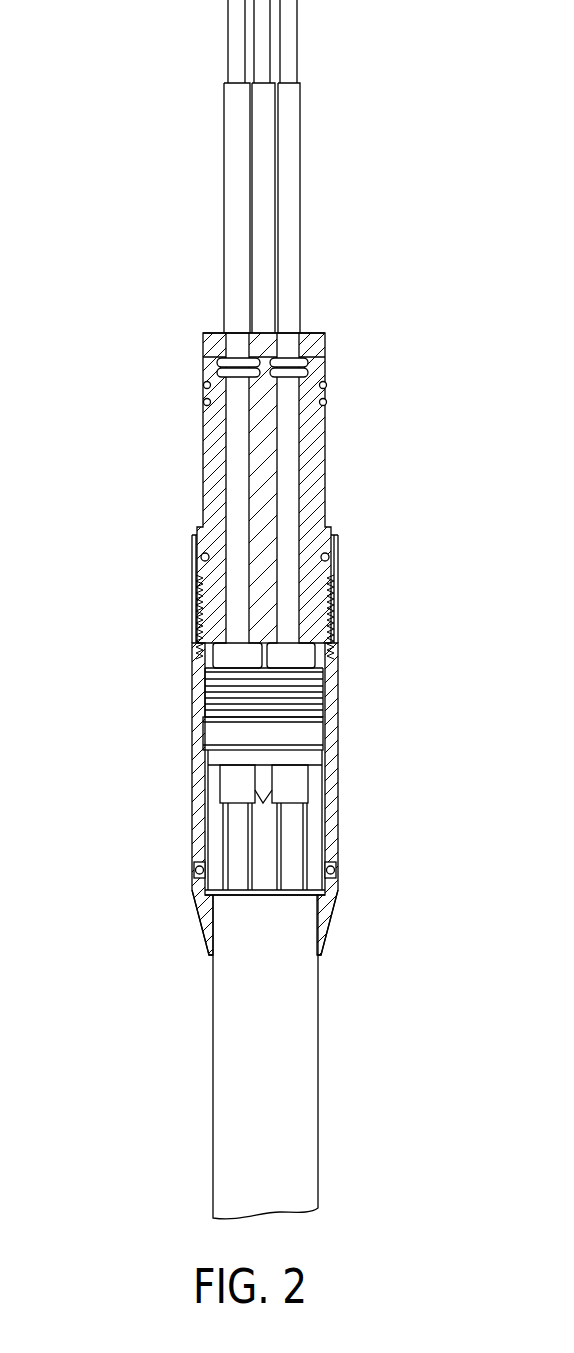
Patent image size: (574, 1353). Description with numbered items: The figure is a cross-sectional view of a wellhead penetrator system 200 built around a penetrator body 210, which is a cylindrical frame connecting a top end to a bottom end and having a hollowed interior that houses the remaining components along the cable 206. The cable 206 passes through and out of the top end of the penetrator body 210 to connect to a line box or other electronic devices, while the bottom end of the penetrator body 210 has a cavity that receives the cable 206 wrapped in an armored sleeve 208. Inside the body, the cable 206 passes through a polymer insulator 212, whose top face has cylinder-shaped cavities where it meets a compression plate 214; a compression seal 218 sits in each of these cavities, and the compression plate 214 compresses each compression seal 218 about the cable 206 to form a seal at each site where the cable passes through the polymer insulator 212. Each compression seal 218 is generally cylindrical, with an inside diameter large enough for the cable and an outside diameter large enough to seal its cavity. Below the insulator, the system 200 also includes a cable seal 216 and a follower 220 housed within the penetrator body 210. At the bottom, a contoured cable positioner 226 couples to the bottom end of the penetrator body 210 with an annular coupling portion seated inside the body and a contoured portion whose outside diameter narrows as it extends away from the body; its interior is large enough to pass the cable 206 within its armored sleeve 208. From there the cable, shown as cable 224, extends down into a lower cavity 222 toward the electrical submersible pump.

The wellhead penetrator system 200 is at (130, 196).
The cable 206 is at (304, 119).
The armored sleeve 208 is at (321, 1085).
The penetrator body 210 is at (339, 742).
The polymer insulator 212 is at (324, 460).
The compression plate 214 is at (323, 332).
The cable seal 216 is at (324, 685).
The compression seal 218 is at (319, 374).
The follower 220 is at (306, 751).
The lower cavity 222 is at (313, 855).
The cable 224 is at (301, 840).
The contoured cable positioner 226 is at (327, 937).